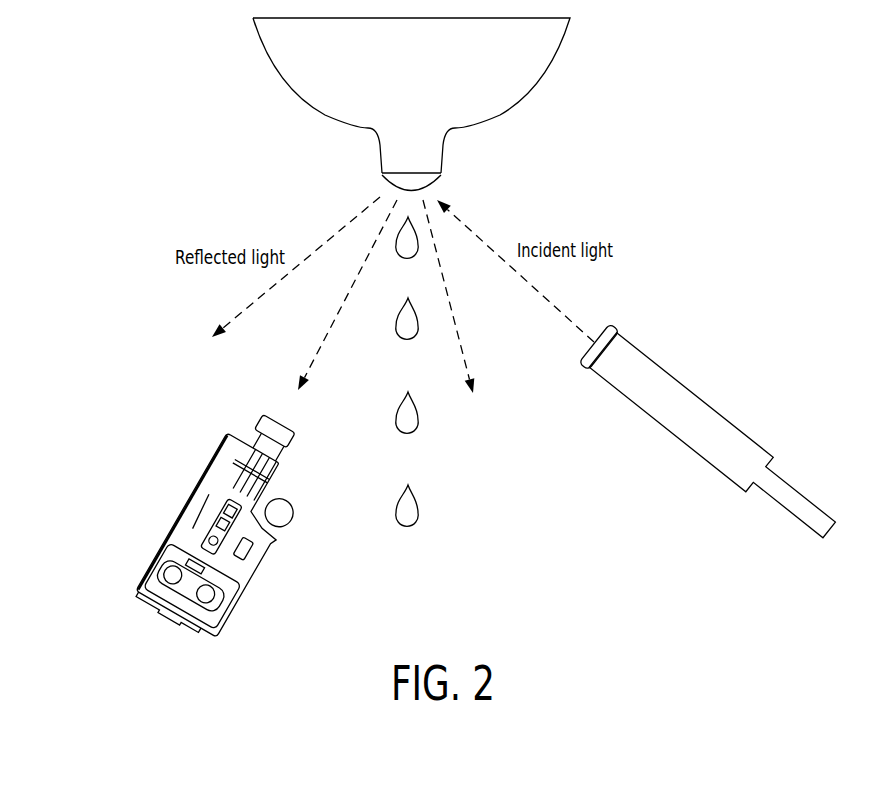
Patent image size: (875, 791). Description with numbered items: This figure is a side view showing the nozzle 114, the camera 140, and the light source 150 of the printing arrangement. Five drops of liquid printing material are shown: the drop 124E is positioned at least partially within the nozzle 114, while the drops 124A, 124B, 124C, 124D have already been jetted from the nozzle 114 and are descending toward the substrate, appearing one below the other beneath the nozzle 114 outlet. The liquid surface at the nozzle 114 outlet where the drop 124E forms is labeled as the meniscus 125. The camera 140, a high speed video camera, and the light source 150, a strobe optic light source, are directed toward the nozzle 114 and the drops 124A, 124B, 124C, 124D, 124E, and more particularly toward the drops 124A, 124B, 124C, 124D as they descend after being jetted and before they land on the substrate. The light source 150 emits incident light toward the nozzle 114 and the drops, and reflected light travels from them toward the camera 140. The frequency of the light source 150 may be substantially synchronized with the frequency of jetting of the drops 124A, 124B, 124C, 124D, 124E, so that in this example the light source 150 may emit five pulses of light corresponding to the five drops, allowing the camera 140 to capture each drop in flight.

The nozzle 114 is at (523, 85).
The drop 124A is at (420, 515).
The drop 124B is at (420, 422).
The drop 124C is at (397, 340).
The drop 124D is at (397, 257).
The drop 124E is at (440, 181).
The meniscus 125 is at (370, 186).
The camera 140 is at (178, 518).
The light source 150 is at (703, 397).